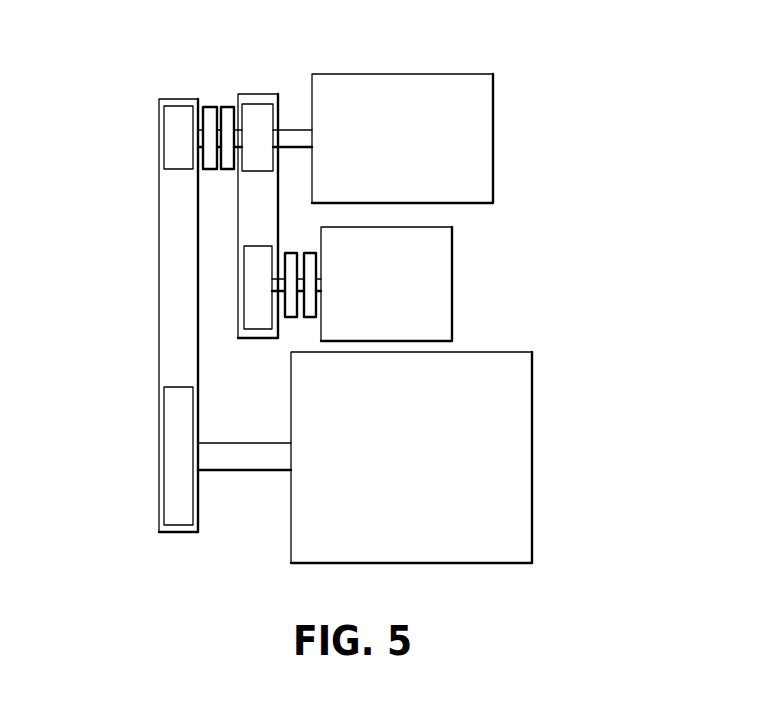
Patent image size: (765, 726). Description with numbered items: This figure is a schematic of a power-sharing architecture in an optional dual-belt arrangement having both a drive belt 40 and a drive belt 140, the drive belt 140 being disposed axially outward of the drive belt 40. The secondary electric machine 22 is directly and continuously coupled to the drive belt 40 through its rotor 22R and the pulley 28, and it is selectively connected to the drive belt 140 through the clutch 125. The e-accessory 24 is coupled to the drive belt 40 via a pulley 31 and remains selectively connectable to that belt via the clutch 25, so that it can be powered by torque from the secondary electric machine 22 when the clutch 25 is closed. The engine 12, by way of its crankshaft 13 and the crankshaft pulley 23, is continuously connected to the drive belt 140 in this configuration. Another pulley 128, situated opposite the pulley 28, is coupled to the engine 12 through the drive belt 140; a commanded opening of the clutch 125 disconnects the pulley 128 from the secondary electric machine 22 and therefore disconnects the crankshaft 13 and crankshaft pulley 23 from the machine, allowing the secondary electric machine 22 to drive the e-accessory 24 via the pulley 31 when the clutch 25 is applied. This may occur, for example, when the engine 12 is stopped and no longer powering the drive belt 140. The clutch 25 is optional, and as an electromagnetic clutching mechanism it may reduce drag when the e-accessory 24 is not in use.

The engine 12 is at (533, 457).
The crankshaft 13 is at (270, 472).
The secondary electric machine 22 is at (495, 137).
The rotor 22R is at (294, 130).
The crankshaft pulley 23 is at (173, 458).
The e-accessory 24 is at (453, 282).
The clutch 25 is at (244, 403).
The pulley 28 is at (260, 117).
The pulley 31 is at (245, 310).
The drive belt 40 is at (258, 217).
The clutch 125 is at (214, 86).
The pulley 128 is at (173, 127).
The drive belt 140 is at (173, 293).